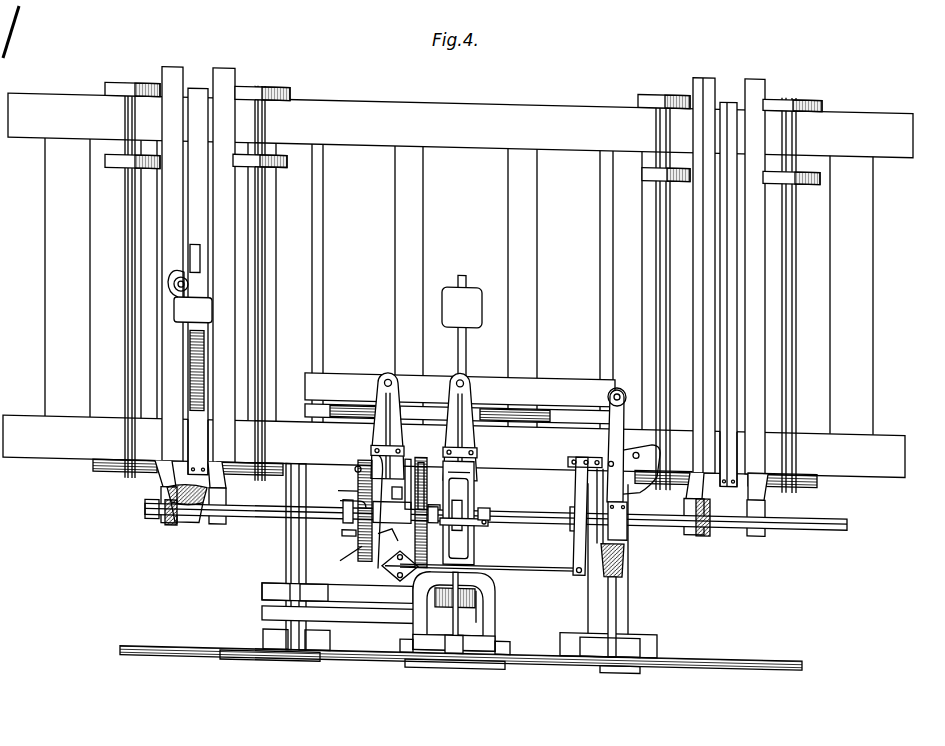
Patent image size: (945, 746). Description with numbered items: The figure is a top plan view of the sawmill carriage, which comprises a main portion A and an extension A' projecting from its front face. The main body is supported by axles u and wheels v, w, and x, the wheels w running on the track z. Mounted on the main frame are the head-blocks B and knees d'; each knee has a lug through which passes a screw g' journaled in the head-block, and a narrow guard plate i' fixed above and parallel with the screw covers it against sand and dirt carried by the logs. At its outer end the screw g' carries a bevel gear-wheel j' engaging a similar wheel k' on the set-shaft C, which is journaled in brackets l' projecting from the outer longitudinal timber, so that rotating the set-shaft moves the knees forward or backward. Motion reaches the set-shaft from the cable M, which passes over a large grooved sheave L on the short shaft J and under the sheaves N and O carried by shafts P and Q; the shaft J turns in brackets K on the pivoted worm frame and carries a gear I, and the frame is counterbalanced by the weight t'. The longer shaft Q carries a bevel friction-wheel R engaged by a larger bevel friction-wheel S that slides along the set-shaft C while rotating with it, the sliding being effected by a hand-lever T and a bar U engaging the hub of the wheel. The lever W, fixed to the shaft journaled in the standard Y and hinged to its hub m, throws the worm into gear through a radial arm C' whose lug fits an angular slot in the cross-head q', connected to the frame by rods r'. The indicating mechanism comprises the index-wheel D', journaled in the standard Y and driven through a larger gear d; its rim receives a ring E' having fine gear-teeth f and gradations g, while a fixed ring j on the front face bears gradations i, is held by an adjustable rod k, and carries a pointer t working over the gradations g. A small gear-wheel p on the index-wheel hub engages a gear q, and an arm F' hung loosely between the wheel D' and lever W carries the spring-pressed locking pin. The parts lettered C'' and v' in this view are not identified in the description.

The main portion of the carriage A is at (458, 285).
The extension of the carriage A' is at (466, 560).
The head-block B is at (700, 427).
The set-shaft C is at (496, 516).
The radial arm C' is at (486, 607).
The clutch box C'' is at (458, 513).
The index-wheel D' is at (346, 482).
The indicator-ring E' is at (344, 558).
The arm F' is at (348, 495).
The gear I is at (460, 600).
The short shaft J is at (446, 600).
The brackets K is at (455, 610).
The grooved sheave L is at (490, 652).
The cable M is at (180, 648).
The sheave N is at (270, 663).
The sheave O is at (632, 652).
The shaft P is at (339, 618).
The shaft Q is at (608, 590).
The bevel friction-wheel R is at (626, 557).
The bevel friction-wheel S is at (617, 521).
The hand-lever T is at (382, 565).
The bar U is at (574, 533).
The lever W is at (343, 531).
The standard Y is at (396, 490).
The gear-wheel d is at (425, 471).
The knee d' is at (190, 283).
The gear-teeth f is at (388, 541).
The gradations g is at (364, 500).
The screw g' is at (206, 370).
The gradations i is at (462, 452).
The guard plate i' is at (462, 287).
The ring j is at (359, 511).
The bevel gear-wheel j' is at (187, 516).
The adjustable rod k is at (343, 457).
The bevel gear-wheel k' is at (434, 526).
The brackets l' is at (449, 498).
The hub m is at (343, 510).
The gear-wheel p is at (415, 525).
The gear q is at (411, 469).
The cross-head q' is at (464, 530).
The rods r' is at (461, 530).
The pointer t is at (392, 512).
The weight t' is at (462, 326).
The axles u is at (124, 284).
The wheels v is at (463, 485).
The lower nut v' is at (663, 488).
The wheels w is at (112, 166).
The wheels x is at (113, 80).
The track z is at (459, 482).